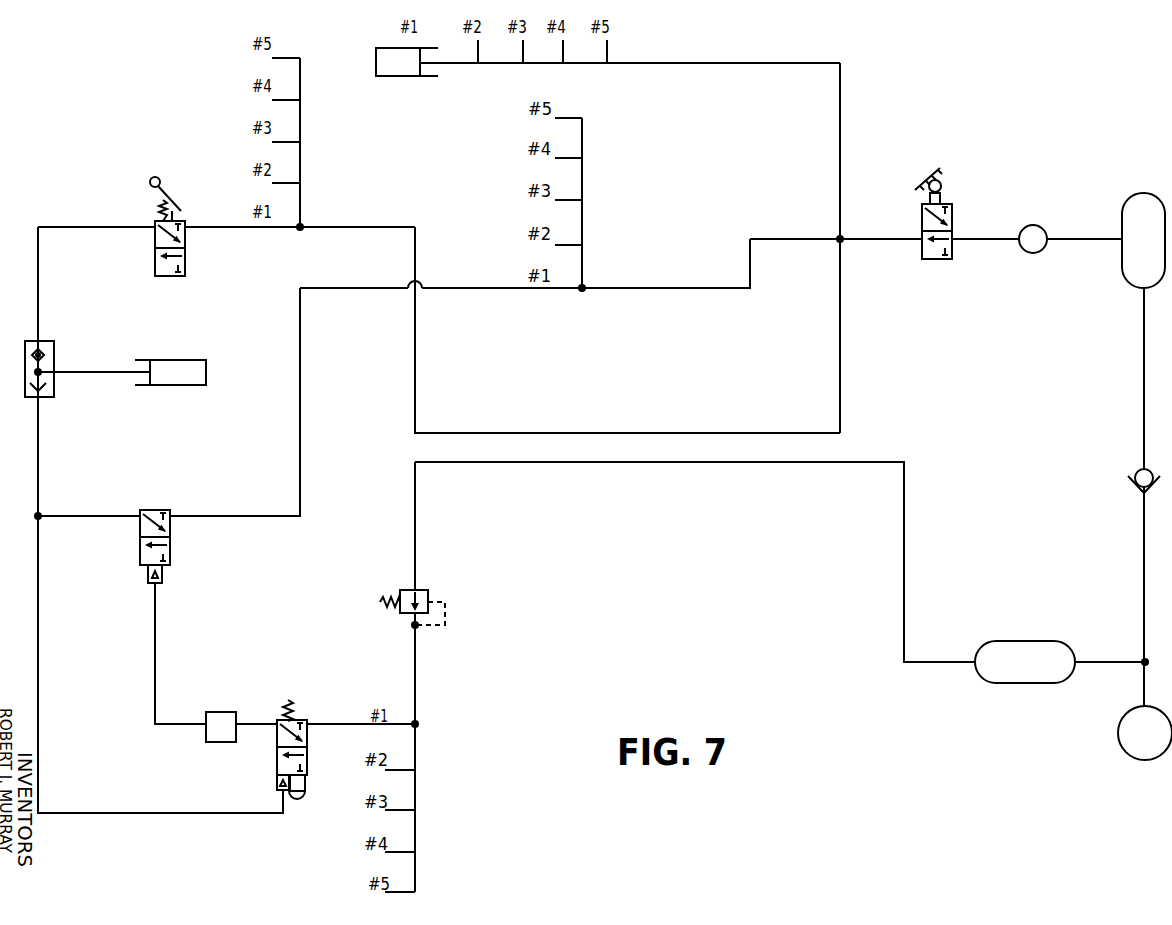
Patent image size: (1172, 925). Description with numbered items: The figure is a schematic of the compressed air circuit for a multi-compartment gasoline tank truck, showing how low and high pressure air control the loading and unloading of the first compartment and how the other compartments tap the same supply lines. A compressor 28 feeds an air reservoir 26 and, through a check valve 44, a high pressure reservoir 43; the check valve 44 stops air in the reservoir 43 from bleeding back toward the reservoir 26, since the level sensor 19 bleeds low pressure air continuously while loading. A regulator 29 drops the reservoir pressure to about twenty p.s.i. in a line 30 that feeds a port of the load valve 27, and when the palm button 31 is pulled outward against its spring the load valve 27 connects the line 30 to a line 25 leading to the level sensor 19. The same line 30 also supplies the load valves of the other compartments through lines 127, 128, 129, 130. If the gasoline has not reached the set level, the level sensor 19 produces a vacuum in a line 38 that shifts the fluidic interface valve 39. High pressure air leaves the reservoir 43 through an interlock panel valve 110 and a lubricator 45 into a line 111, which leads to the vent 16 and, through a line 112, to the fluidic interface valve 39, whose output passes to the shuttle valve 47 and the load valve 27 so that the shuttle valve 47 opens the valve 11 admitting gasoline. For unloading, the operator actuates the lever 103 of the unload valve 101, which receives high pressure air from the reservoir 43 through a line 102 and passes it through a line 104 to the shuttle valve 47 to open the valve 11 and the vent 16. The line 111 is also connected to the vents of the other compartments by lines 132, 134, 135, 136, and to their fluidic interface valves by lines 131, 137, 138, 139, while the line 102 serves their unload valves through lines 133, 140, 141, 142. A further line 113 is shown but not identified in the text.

The valve 11 is at (198, 355).
The vent 16 is at (405, 78).
The level sensor 19 is at (226, 708).
The line 25 is at (303, 735).
The air reservoir 26 is at (993, 683).
The load valve 27 is at (312, 746).
The compressor 28 is at (1130, 761).
The regulator 29 is at (423, 590).
The line 30 is at (418, 686).
The palm button 31 is at (307, 789).
The line 38 is at (160, 674).
The fluidic interface valve 39 is at (174, 552).
The reservoir 43 is at (1126, 288).
The check valve 44 is at (1135, 470).
The lubricator 45 is at (1036, 253).
The shuttle valve 47 is at (60, 389).
The unload valve 101 is at (191, 262).
The line 102 is at (585, 430).
The lever 103 is at (183, 212).
The line 104 is at (40, 297).
The interlock panel valve 110 is at (937, 262).
The line 111 is at (843, 107).
The line 112 is at (303, 473).
The line 113 is at (60, 515).
The line 127 is at (413, 771).
The line 128 is at (413, 811).
The line 129 is at (413, 853).
The line 130 is at (413, 893).
The line 131 is at (584, 244).
The line 132 is at (475, 65).
The line 133 is at (299, 187).
The line 134 is at (520, 65).
The line 135 is at (562, 66).
The line 136 is at (609, 58).
The line 137 is at (584, 199).
The line 138 is at (584, 157).
The line 139 is at (584, 117).
The line 140 is at (299, 146).
The line 141 is at (299, 104).
The line 142 is at (299, 62).